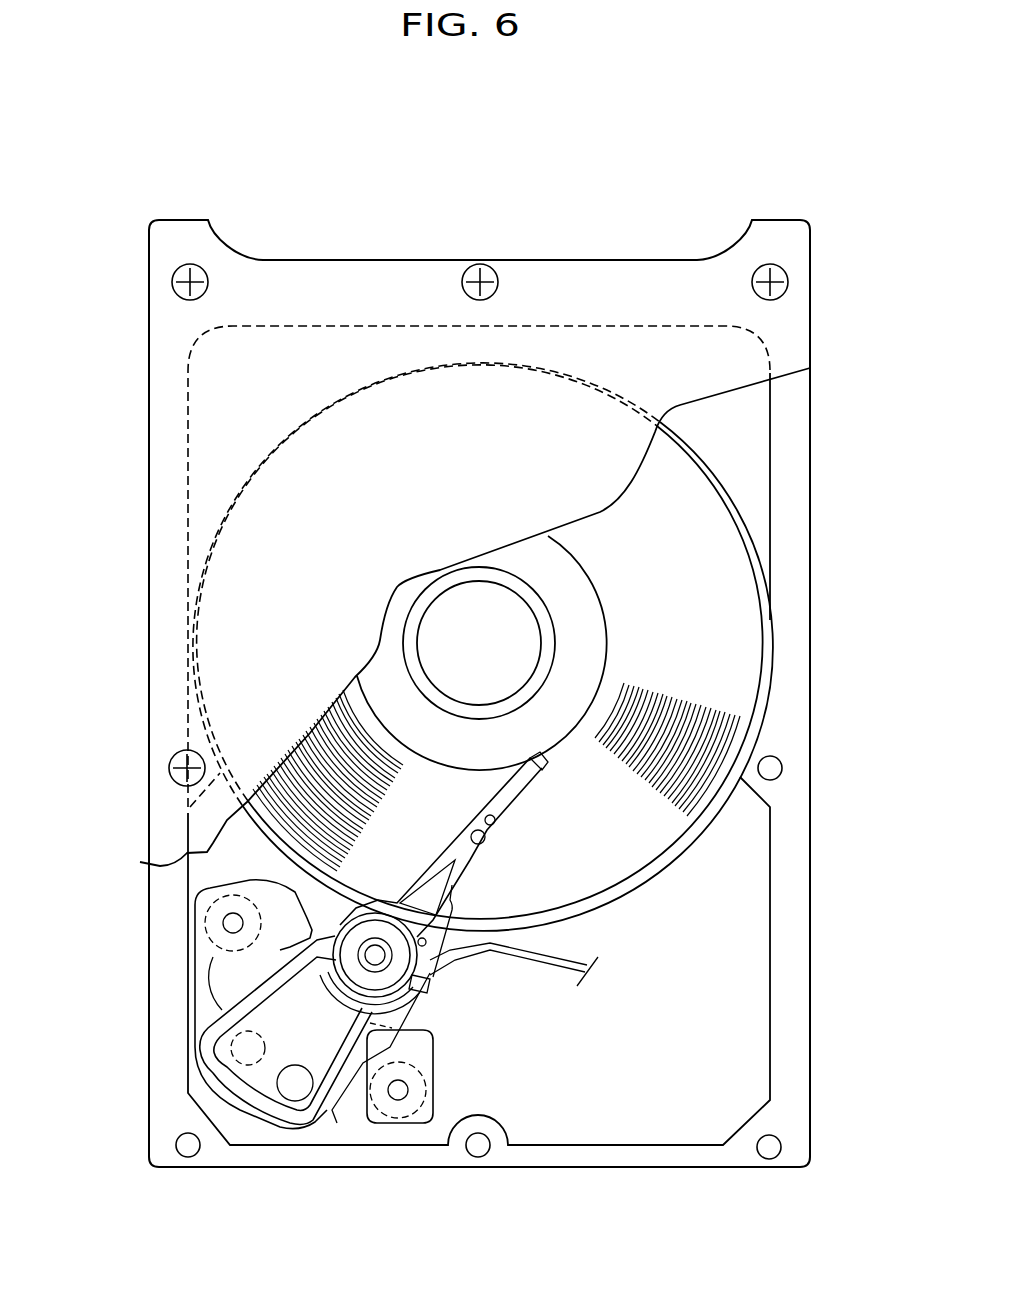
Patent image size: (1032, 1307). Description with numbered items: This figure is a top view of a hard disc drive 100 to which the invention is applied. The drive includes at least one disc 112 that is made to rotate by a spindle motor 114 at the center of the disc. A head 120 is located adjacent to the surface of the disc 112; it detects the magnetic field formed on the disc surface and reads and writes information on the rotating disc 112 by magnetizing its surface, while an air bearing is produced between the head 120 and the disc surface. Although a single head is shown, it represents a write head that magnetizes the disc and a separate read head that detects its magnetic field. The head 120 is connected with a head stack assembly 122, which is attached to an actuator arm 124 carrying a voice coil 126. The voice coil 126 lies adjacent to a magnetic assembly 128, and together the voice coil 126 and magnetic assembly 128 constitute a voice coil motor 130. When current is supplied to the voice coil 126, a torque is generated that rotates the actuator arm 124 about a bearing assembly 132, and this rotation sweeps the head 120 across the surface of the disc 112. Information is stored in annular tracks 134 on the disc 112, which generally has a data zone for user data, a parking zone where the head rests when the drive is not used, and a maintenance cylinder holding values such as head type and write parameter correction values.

The hard disc drive 100 is at (648, 201).
The disc 112 is at (722, 583).
The spindle motor 114 is at (455, 620).
The head 120 is at (538, 772).
The head stack assembly 122 is at (503, 808).
The actuator arm 124 is at (290, 972).
The voice coil 126 is at (230, 1038).
The magnetic assembly 128 is at (232, 987).
The voice coil motor 130 is at (345, 1103).
The bearing assembly 132 is at (380, 962).
The annular tracks 134 is at (340, 757).